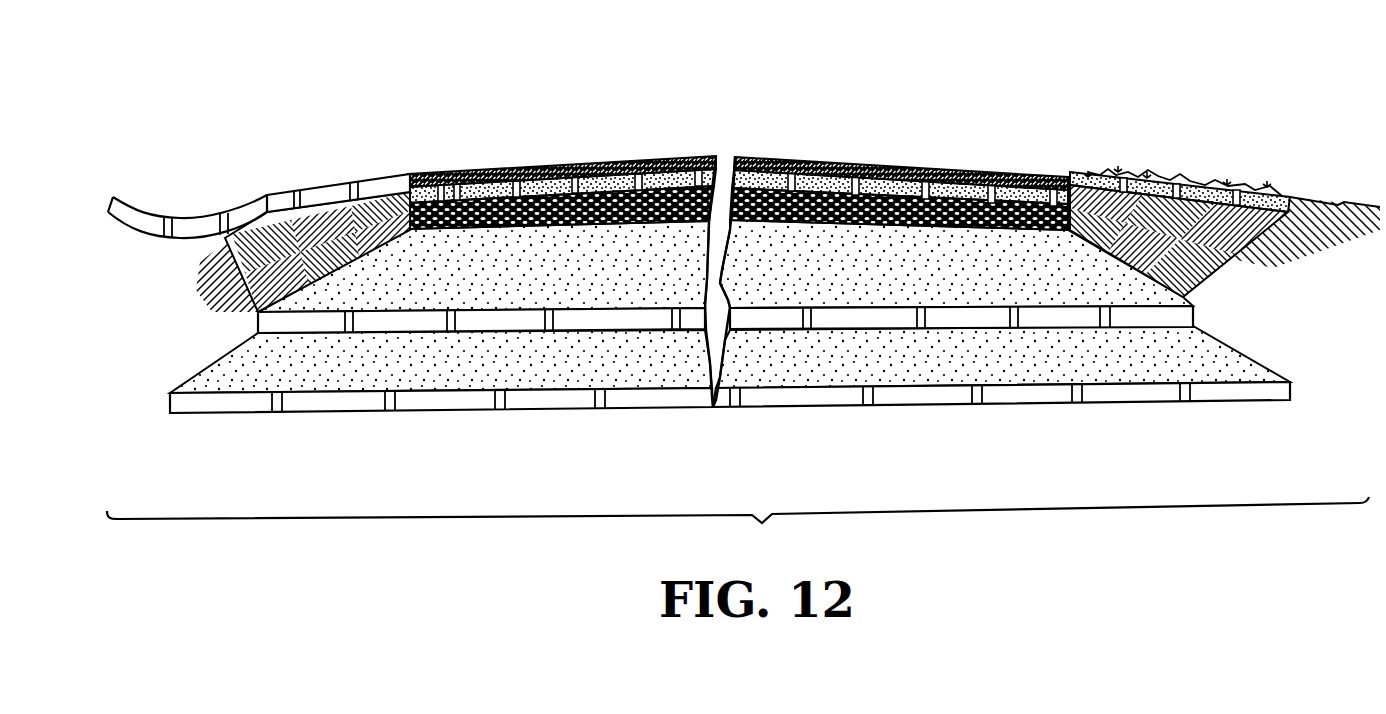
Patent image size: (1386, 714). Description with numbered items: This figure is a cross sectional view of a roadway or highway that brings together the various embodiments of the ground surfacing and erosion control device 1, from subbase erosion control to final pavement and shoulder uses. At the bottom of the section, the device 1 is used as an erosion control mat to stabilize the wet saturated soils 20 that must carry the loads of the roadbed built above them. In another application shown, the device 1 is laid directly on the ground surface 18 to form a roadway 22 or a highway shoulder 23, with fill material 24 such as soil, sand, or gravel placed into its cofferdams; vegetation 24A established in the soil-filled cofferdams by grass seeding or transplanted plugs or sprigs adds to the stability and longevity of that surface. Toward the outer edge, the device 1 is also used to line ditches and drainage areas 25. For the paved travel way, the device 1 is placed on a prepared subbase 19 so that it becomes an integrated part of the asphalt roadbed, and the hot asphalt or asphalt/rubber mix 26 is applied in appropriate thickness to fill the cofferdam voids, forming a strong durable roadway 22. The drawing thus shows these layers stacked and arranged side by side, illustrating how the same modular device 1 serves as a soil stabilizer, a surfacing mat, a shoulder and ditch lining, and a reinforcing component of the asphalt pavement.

The ground surfacing and erosion control device 1 is at (242, 326).
The ground surface 18 is at (327, 212).
The prepared subbase 19 is at (443, 182).
The wet saturated soils 20 is at (474, 273).
The roadway 22 is at (878, 163).
The highway shoulder 23 is at (1257, 187).
The fill material 24 is at (1087, 173).
The vegetation 24A is at (1150, 177).
The ditches and drainage areas 25 is at (197, 220).
The hot asphalt or asphalt/rubber mix 26 is at (662, 157).